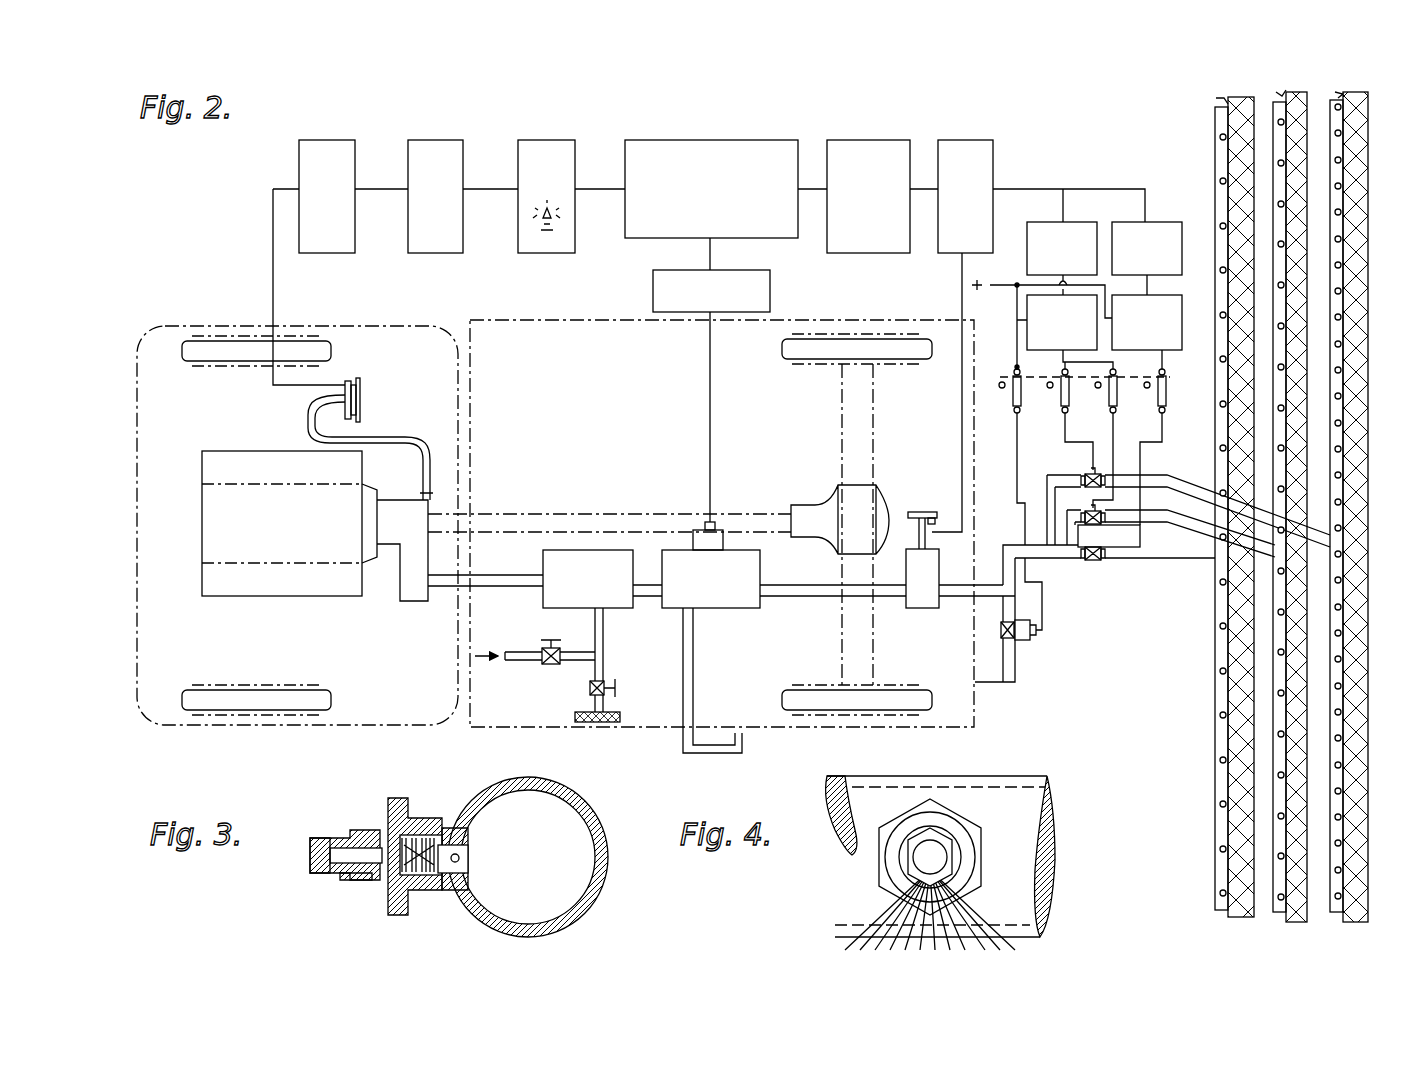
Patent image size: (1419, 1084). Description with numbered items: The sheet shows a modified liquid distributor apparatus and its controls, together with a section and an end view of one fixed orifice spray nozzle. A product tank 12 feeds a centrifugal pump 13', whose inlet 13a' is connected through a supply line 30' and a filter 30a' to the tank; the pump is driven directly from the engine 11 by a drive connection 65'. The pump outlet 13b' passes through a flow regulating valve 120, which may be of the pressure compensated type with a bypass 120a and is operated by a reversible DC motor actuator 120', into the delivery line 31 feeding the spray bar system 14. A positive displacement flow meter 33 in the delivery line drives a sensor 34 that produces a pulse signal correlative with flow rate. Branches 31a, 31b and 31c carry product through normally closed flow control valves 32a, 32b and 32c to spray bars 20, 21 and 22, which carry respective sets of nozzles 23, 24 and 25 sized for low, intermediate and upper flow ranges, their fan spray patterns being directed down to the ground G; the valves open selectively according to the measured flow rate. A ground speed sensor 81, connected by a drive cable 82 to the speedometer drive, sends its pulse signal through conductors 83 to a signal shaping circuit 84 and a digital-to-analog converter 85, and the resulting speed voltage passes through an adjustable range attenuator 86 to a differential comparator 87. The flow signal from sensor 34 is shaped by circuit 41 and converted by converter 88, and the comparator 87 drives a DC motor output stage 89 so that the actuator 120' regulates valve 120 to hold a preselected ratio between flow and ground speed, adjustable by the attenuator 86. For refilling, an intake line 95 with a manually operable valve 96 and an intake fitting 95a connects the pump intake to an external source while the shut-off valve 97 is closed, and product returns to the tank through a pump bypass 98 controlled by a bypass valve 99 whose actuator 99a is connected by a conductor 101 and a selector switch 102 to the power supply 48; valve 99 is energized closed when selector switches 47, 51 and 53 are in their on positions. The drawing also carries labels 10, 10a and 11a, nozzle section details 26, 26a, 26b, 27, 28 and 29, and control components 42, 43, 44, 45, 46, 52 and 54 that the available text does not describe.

In FIG. 2, the tractor vehicle 10 is at (262, 708).
In FIG. 2, the trailer wheels 10a is at (868, 706).
In FIG. 2, the engine 11 is at (278, 582).
In FIG. 2, the drive shaft 11a is at (555, 510).
In FIG. 2, the product tank 12 is at (478, 727).
In FIG. 2, the centrifugal pump 13' is at (565, 583).
In FIG. 2, the pump inlet 13a' is at (621, 660).
In FIG. 2, the pump outlet 13b' is at (649, 569).
In FIG. 2, the spray bar system 14 is at (1212, 614).
In FIG. 2, the first spray bar 20 is at (1300, 502).
In FIG. 3, the first spray bar 20 is at (577, 795).
In FIG. 4, the first spray bar 20 is at (993, 776).
In FIG. 2, the second spray bar 21 is at (1285, 918).
In FIG. 2, the third spray bar 22 is at (1212, 800).
In FIG. 2, the spray nozzles 23 is at (1341, 793).
In FIG. 3, the spray nozzles 23 is at (332, 840).
In FIG. 4, the spray nozzles 23 is at (945, 847).
In FIG. 2, the spray nozzles 24 is at (1270, 755).
In FIG. 2, the spray nozzles 25 is at (1212, 748).
In FIG. 3, the nozzle body 26 is at (365, 830).
In FIG. 4, the nozzle body 26 is at (955, 857).
In FIG. 3, the nozzle body part 26a is at (352, 878).
In FIG. 3, the nozzle body part 26b is at (335, 870).
In FIG. 3, the hex nut 27 is at (415, 818).
In FIG. 3, the spring 28 is at (430, 878).
In FIG. 3, the valve fitting 29 is at (462, 832).
In FIG. 2, the supply line 30' is at (623, 659).
In FIG. 2, the filter 30a' is at (623, 710).
In FIG. 2, the delivery line 31 is at (785, 596).
In FIG. 2, the branch 31a is at (1160, 470).
In FIG. 2, the branch 31b is at (1153, 510).
In FIG. 2, the branch 31c is at (1148, 563).
In FIG. 2, the flow control valve 32a is at (1088, 468).
In FIG. 2, the flow control valve 32b is at (1088, 507).
In FIG. 2, the flow control valve 32c is at (1090, 563).
In FIG. 2, the positive displacement flow meter 33 is at (924, 608).
In FIG. 2, the flow rate sensor 34 is at (922, 512).
In FIG. 2, the signal shaping circuit 41 is at (943, 238).
In FIG. 2, the digital to analog converter 42 is at (1046, 215).
In FIG. 2, the digital to analog converter 43 is at (1134, 215).
In FIG. 2, the valve control switch 44 is at (1027, 305).
In FIG. 2, the valve control switch 45 is at (1172, 301).
In FIG. 2, the relay 46 is at (1085, 412).
In FIG. 2, the selector switch 47 is at (1058, 398).
In FIG. 2, the power supply 48 is at (1000, 285).
In FIG. 2, the selector switch 51 is at (1120, 398).
In FIG. 2, the relay contact 52 is at (1118, 416).
In FIG. 2, the selector switch 53 is at (1168, 398).
In FIG. 2, the relay output line 54 is at (1140, 455).
In FIG. 2, the drive connection 65' is at (485, 566).
In FIG. 2, the ground speed sensor 81 is at (360, 395).
In FIG. 2, the drive cable 82 is at (392, 437).
In FIG. 2, the conductors 83 is at (273, 300).
In FIG. 2, the signal shaping circuit 84 is at (341, 243).
In FIG. 2, the digital-to-analog converter 85 is at (435, 243).
In FIG. 2, the adjustable range attenuator 86 is at (538, 244).
In FIG. 2, the differential comparator 87 is at (652, 228).
In FIG. 2, the digital-to-analog converter 88 is at (870, 243).
In FIG. 2, the DC motor output stage 89 is at (760, 276).
In FIG. 2, the intake line 95 is at (585, 660).
In FIG. 2, the intake fitting 95a is at (505, 660).
In FIG. 2, the manually operable valve 96 is at (550, 665).
In FIG. 2, the shut-off valve 97 is at (588, 690).
In FIG. 2, the pump bypass 98 is at (1015, 675).
In FIG. 2, the bypass valve 99 is at (1000, 630).
In FIG. 2, the actuator 99a is at (1025, 640).
In FIG. 2, the conductor 101 is at (1014, 478).
In FIG. 2, the selector switch 102 is at (1012, 398).
In FIG. 2, the flow regulating valve 120 is at (714, 590).
In FIG. 2, the reversible DC motor actuator 120' is at (730, 513).
In FIG. 2, the bypass 120a is at (693, 673).
In FIG. 2, the ground G is at (1273, 94).